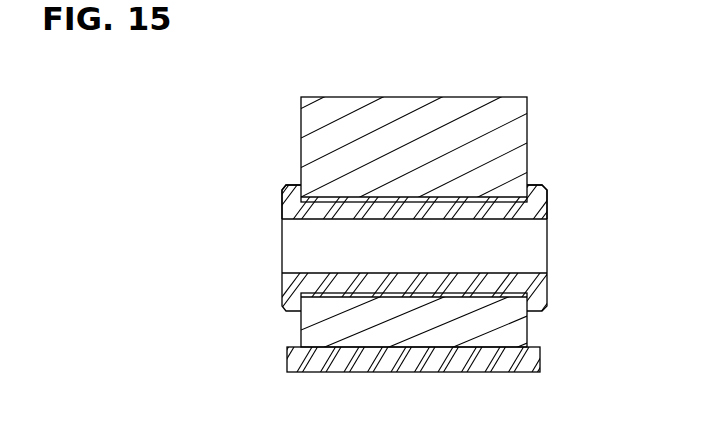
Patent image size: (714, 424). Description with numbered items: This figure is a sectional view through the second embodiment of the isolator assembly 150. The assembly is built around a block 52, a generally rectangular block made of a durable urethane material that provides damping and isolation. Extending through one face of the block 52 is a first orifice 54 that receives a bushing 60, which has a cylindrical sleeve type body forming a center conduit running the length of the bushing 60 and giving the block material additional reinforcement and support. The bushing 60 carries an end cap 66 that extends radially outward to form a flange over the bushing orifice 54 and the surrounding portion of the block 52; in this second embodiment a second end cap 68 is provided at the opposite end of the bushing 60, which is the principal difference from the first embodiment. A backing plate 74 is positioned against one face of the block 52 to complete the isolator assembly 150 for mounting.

The isolator assembly 150 is at (272, 116).
The block 52 is at (338, 110).
The first orifice 54 is at (332, 297).
The bushing 60 is at (455, 282).
The end cap 66 is at (290, 190).
The second end cap 68 is at (540, 195).
The backing plate 74 is at (460, 360).